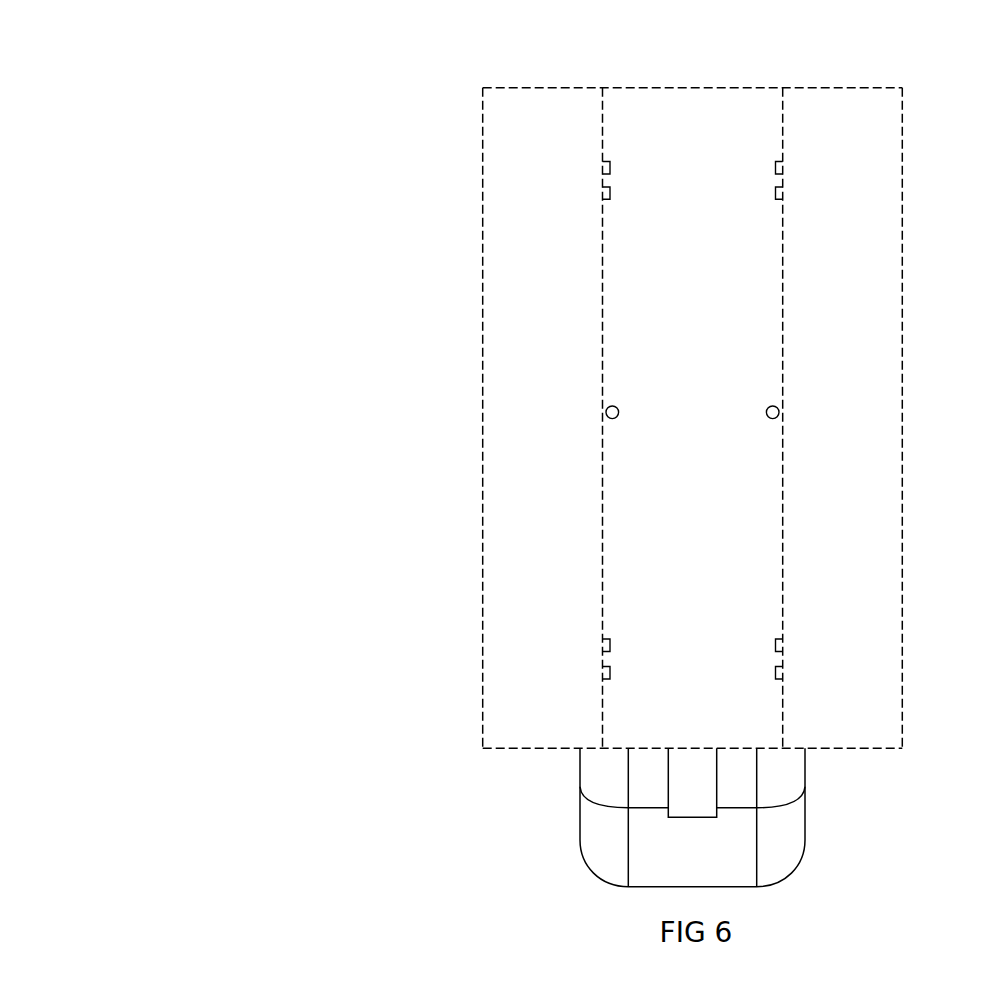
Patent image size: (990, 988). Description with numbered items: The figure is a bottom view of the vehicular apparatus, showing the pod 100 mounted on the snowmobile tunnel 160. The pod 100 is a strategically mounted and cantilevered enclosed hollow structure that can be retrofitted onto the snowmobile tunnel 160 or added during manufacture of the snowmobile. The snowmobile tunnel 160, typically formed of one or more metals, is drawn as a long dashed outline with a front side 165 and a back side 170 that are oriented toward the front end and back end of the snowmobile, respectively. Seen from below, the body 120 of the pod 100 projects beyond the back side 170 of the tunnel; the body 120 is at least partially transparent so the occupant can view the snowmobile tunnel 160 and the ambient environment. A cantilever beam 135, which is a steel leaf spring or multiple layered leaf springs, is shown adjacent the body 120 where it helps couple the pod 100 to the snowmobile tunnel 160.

The pod 100 is at (236, 173).
The body 120 is at (710, 858).
The cantilever beam 135 is at (710, 788).
The snowmobile tunnel 160 is at (902, 122).
The front side 165 is at (498, 78).
The back side 170 is at (490, 762).